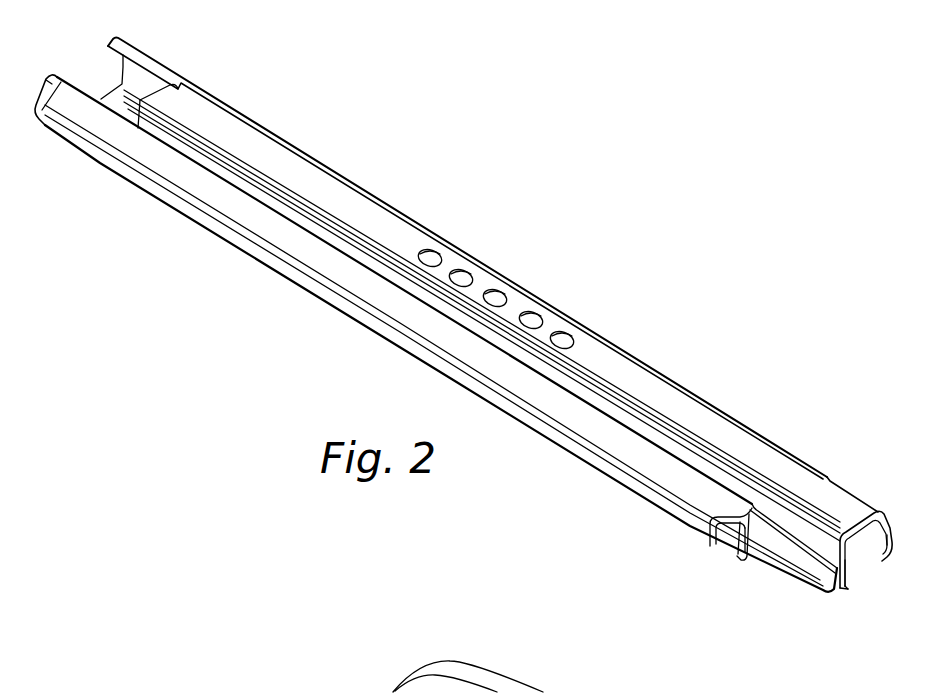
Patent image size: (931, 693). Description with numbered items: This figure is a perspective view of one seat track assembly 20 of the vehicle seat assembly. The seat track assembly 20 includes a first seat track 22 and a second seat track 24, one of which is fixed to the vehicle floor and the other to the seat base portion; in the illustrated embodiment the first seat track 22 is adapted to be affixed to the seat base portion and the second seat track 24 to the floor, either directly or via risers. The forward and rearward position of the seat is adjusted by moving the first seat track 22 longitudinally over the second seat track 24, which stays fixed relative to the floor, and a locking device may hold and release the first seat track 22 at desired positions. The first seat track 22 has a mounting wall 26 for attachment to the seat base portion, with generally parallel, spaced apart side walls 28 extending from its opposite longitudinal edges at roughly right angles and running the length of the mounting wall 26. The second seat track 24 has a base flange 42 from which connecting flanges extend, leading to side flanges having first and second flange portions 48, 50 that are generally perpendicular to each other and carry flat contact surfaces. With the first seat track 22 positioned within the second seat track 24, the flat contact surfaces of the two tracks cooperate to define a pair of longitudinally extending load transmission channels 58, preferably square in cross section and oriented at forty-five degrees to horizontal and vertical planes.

The seat track assembly 20 is at (696, 256).
The first seat track 22 is at (353, 198).
The second seat track 24 is at (258, 261).
The mounting wall 26 is at (843, 498).
The side walls 28 is at (850, 570).
The base flange 42 is at (750, 557).
The first flange portions 48 is at (738, 542).
The second flange portions 50 is at (708, 520).
The load transmission channels 58 is at (773, 583).